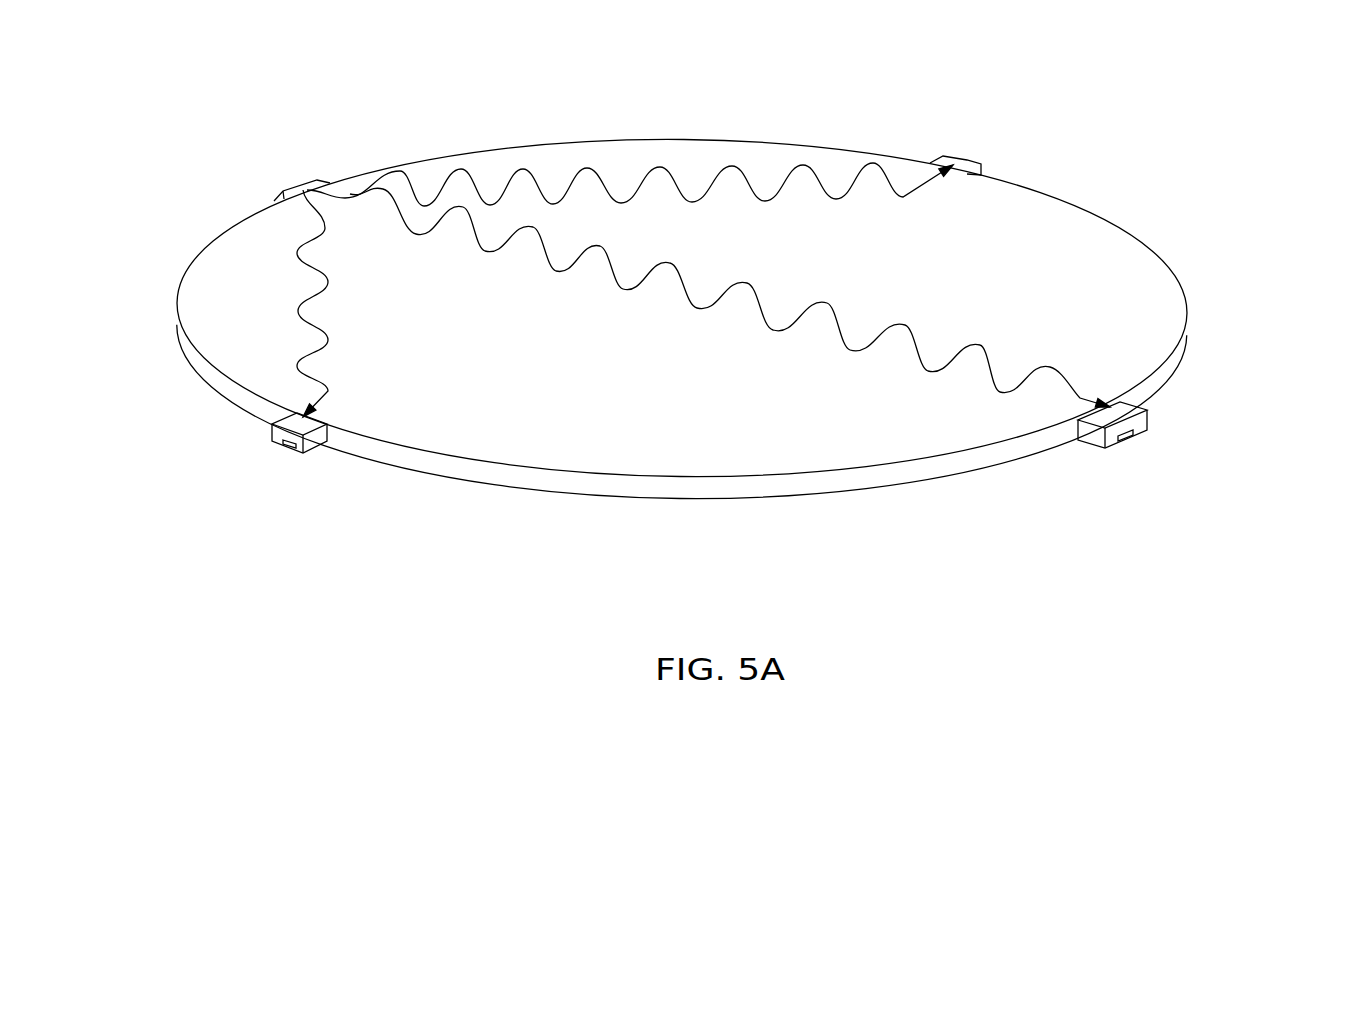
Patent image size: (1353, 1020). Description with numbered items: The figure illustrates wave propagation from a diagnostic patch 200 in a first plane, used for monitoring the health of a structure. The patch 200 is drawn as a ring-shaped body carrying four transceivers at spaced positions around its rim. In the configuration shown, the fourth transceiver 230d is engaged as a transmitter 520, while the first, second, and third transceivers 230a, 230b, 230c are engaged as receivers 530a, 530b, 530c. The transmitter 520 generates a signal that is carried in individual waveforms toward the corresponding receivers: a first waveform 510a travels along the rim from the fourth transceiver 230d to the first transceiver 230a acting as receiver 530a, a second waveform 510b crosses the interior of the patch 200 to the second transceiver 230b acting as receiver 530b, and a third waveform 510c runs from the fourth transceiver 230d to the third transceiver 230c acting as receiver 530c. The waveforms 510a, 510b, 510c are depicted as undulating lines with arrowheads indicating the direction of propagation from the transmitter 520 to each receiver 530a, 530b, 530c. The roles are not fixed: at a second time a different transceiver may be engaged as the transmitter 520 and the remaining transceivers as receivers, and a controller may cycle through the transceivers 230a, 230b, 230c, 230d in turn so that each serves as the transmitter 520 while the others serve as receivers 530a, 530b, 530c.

The ring frame 200 is at (1097, 257).
The waveform 510a is at (742, 170).
The waveform 510b is at (760, 313).
The waveform 510c is at (310, 292).
The transmitter 520 is at (272, 150).
The fourth transceiver 230d is at (300, 182).
The receiver 530a is at (1054, 138).
The first transceiver 230a is at (967, 162).
The receiver 530b is at (1205, 443).
The second transceiver 230b is at (1128, 445).
The receiver 530c is at (251, 471).
The third transceiver 230c is at (288, 449).